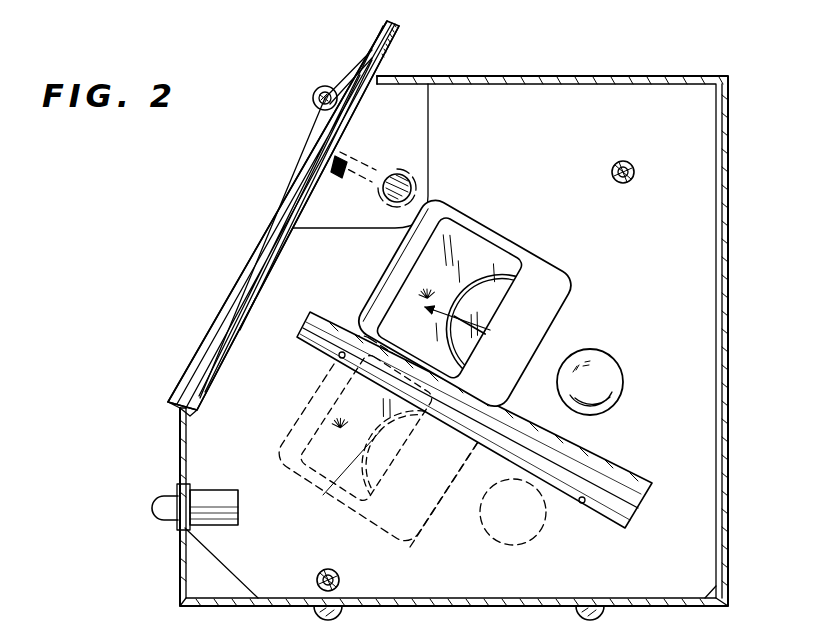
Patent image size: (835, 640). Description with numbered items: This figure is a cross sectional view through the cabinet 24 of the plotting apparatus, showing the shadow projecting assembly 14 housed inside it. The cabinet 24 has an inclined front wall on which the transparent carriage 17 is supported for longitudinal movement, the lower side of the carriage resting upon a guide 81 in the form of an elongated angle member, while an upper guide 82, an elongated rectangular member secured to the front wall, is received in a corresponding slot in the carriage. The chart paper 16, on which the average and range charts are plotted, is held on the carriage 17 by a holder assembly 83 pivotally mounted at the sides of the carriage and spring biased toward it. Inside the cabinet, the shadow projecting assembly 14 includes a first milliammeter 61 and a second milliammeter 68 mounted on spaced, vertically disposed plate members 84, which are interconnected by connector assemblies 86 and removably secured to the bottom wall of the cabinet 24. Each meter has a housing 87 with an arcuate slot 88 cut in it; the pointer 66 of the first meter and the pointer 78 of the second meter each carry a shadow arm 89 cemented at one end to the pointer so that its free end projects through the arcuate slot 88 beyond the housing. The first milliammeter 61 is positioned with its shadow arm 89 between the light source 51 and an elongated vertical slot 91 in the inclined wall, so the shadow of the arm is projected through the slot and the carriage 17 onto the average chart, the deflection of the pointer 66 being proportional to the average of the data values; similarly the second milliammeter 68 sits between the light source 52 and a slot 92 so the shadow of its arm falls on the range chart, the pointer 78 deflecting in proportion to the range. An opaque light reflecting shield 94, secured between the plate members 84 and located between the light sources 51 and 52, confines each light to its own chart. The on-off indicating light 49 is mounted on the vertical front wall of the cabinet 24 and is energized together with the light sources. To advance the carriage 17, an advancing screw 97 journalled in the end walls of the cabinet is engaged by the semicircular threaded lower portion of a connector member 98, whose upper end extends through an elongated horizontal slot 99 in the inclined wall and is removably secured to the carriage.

The shadow projecting assembly 14 is at (476, 331).
The chart paper 16 is at (281, 205).
The carriage 17 is at (250, 260).
The cabinet 24 is at (382, 77).
The on-off indicating light 49 is at (157, 512).
The light source 51 is at (602, 367).
The light source 52 is at (548, 530).
The milliammeter 61 is at (546, 281).
The pointer 66 is at (460, 312).
The milliammeter 68 is at (431, 538).
The pointer 78 is at (444, 506).
The guide 81 is at (172, 410).
The upper guide 82 is at (355, 97).
The holder assembly 83 is at (313, 98).
The plate members 84 is at (593, 108).
The connector assemblies 86 is at (633, 168).
The housing 87 is at (537, 263).
The arcuate slot 88 is at (513, 275).
The shadow arm 89 is at (453, 300).
The slot 91 is at (290, 237).
The slot 92 is at (225, 368).
The light reflecting shield 94 is at (597, 477).
The advancing screw 97 is at (413, 183).
The connector member 98 is at (380, 154).
The slot 99 is at (338, 170).